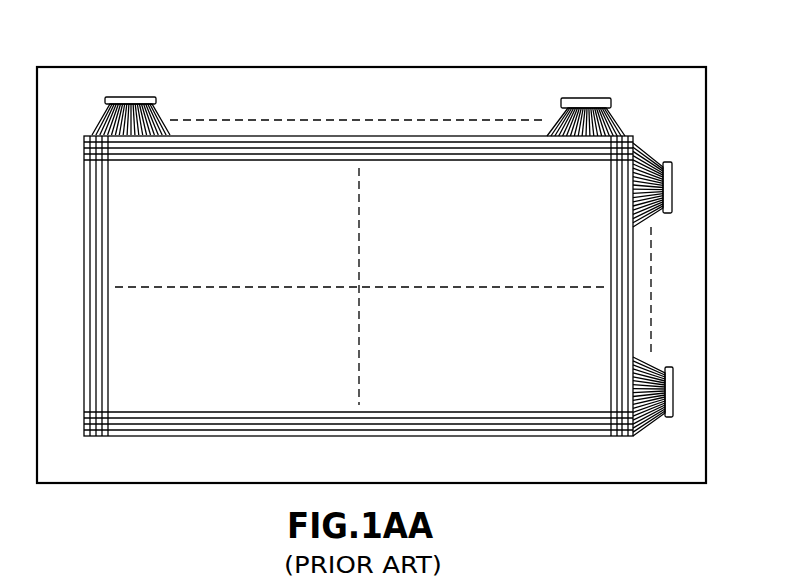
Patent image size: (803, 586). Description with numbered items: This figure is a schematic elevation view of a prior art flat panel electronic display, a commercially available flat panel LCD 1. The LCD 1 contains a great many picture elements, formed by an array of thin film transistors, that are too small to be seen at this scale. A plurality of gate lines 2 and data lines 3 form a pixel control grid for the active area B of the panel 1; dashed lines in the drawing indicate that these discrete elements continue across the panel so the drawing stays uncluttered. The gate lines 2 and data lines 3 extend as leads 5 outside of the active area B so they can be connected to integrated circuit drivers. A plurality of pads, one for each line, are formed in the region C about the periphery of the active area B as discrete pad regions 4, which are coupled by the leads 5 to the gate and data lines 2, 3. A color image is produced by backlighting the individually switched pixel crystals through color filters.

The flat panel LCD 1 is at (441, 67).
The gate lines 2 is at (493, 136).
The data lines 3 is at (633, 303).
The pad regions 4 is at (585, 98).
The leads 5 is at (164, 113).
The active area B is at (486, 241).
The peripheral region C is at (293, 82).